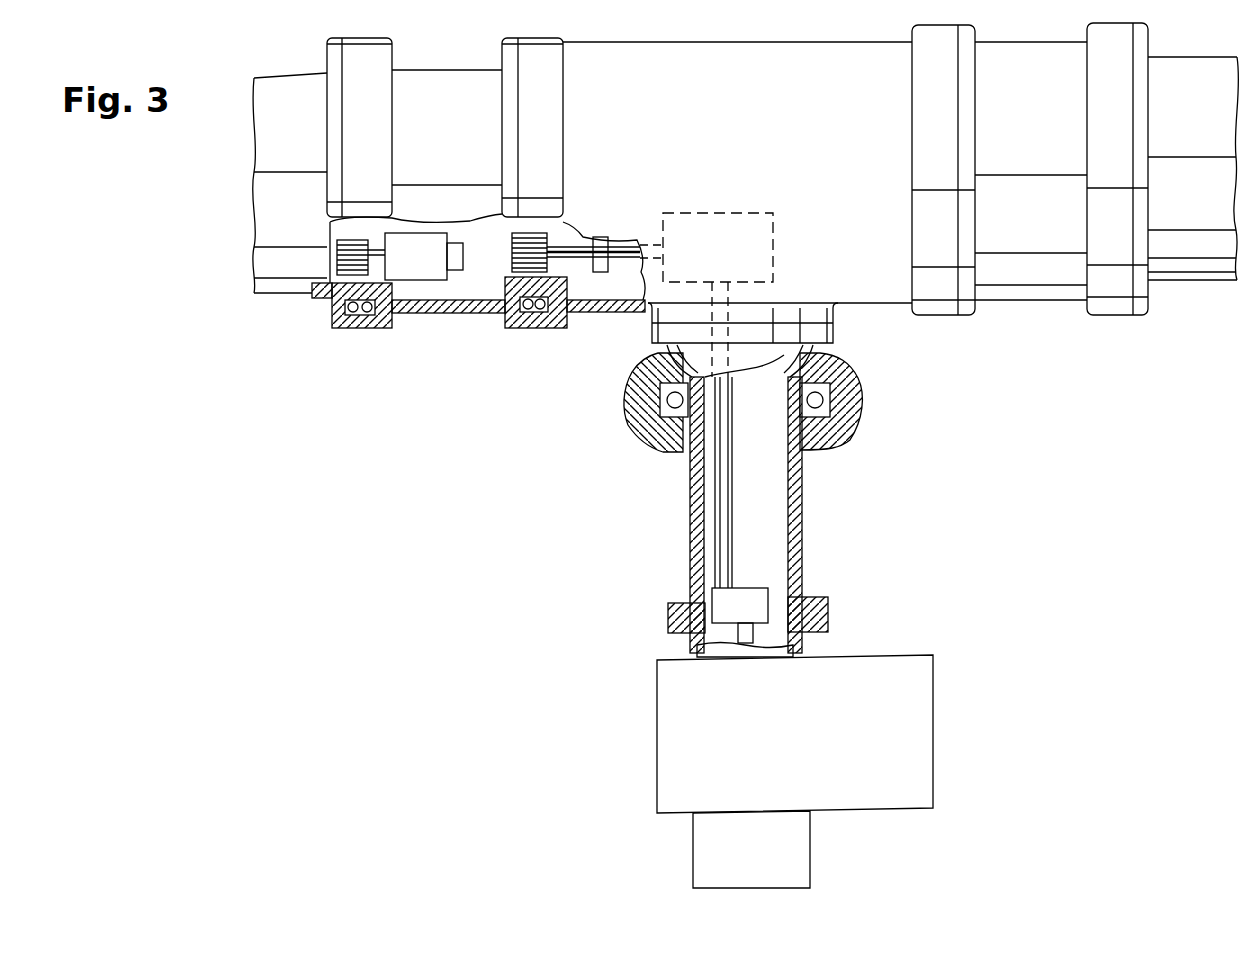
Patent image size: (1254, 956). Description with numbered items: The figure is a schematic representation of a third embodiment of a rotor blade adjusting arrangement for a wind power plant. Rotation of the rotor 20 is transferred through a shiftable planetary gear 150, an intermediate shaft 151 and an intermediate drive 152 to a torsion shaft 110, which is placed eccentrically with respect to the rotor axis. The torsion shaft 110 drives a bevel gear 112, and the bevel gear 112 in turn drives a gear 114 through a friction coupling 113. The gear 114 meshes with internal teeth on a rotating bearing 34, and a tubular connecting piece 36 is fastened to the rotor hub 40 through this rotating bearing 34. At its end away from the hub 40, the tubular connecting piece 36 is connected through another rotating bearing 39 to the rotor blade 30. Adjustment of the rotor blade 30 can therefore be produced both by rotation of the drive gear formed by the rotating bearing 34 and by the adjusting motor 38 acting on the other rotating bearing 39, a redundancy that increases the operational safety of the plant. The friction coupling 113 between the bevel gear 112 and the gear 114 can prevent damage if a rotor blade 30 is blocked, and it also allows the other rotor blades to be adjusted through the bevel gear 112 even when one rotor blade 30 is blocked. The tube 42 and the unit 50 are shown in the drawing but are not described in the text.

The rotor 20 is at (1150, 348).
The rotor blade 30 is at (275, 192).
The rotating bearing 34 is at (502, 332).
The tubular connecting piece 36 is at (441, 88).
The adjusting motor 38 is at (417, 263).
The rotating bearing 39 is at (335, 333).
The hub 40 is at (968, 335).
The tube 42 is at (800, 510).
The control unit 50 is at (918, 692).
The torsion shaft 110 is at (722, 511).
The bevel gear 112 is at (690, 220).
The friction coupling 113 is at (605, 238).
The gear 114 is at (523, 247).
The shiftable planetary gear 150 is at (708, 848).
The intermediate shaft 151 is at (773, 630).
The intermediate drive 152 is at (725, 605).